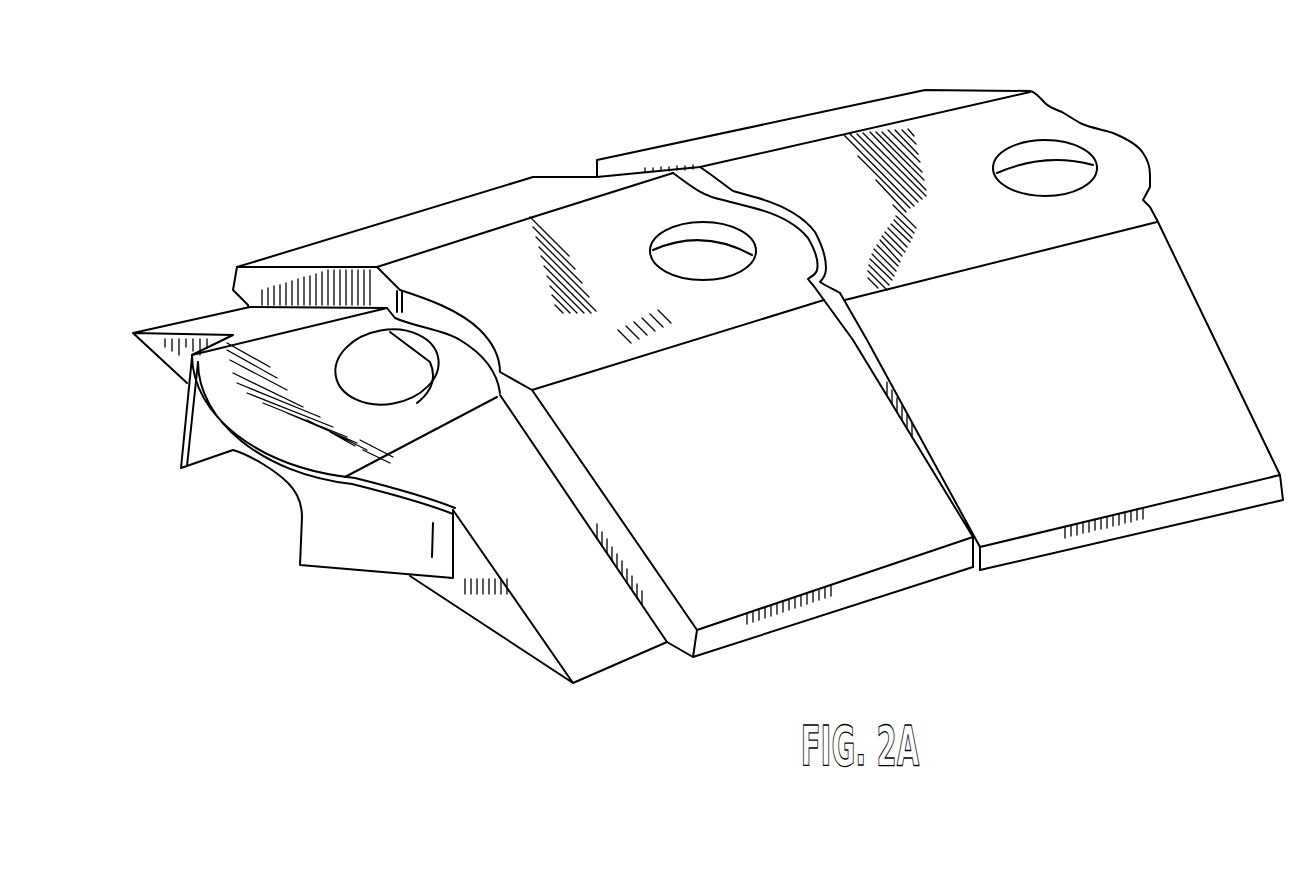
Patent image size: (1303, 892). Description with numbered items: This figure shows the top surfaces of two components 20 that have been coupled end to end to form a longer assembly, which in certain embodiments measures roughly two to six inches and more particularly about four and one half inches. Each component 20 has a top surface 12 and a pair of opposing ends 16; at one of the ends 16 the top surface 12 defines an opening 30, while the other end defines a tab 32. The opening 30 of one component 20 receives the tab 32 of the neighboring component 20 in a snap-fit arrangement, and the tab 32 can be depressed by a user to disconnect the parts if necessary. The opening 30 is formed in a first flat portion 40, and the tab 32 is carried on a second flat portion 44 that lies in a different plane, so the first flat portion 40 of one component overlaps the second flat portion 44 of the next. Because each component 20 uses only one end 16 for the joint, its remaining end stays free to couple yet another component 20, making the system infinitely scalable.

The top surface 12 is at (560, 230).
The opposing ends 16 is at (1147, 157).
The component 20 is at (402, 227).
The opening 30 is at (707, 240).
The tab 32 is at (720, 253).
The first flat portion 40 is at (903, 157).
The second flat portion 44 is at (294, 363).